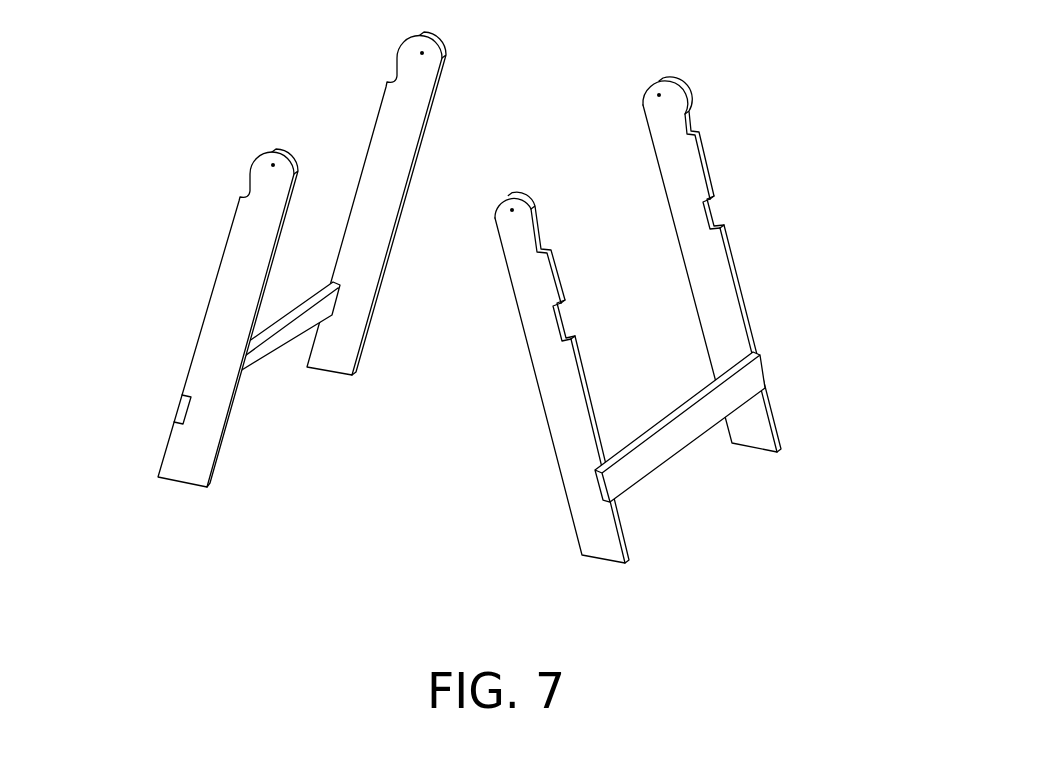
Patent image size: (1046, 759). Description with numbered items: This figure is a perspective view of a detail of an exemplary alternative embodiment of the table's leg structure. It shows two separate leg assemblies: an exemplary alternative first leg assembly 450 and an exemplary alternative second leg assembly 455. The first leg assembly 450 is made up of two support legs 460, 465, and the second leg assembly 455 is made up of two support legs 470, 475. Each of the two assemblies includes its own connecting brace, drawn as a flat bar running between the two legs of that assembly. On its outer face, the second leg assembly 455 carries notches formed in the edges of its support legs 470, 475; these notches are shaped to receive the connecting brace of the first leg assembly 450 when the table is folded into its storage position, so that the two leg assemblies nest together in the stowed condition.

The first leg assembly 450 is at (158, 302).
The second leg assembly 455 is at (854, 337).
The support leg 460 is at (242, 243).
The support leg 465 is at (417, 122).
The support leg 470 is at (555, 408).
The support leg 475 is at (727, 290).